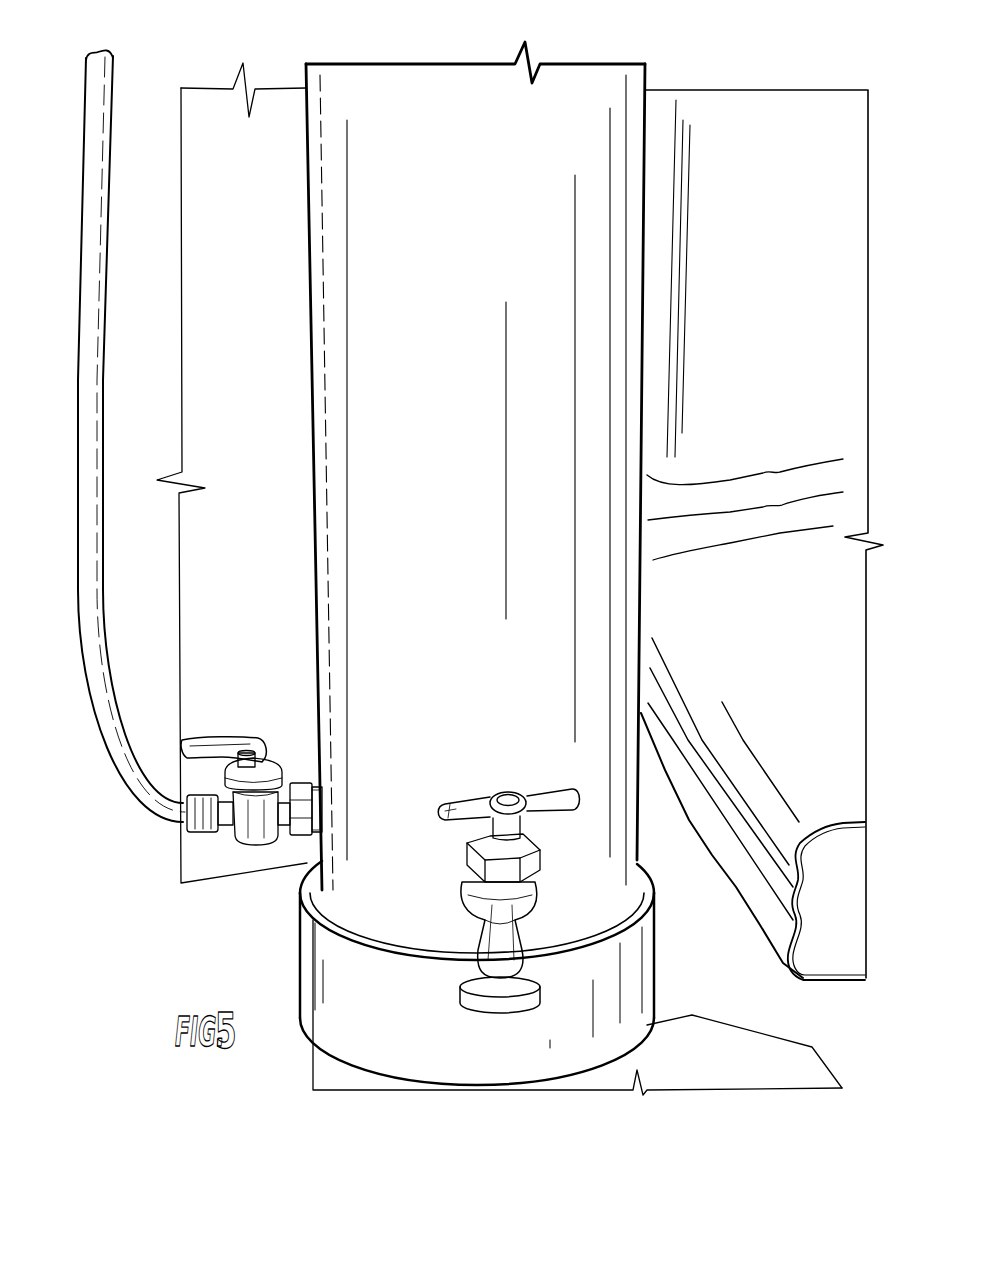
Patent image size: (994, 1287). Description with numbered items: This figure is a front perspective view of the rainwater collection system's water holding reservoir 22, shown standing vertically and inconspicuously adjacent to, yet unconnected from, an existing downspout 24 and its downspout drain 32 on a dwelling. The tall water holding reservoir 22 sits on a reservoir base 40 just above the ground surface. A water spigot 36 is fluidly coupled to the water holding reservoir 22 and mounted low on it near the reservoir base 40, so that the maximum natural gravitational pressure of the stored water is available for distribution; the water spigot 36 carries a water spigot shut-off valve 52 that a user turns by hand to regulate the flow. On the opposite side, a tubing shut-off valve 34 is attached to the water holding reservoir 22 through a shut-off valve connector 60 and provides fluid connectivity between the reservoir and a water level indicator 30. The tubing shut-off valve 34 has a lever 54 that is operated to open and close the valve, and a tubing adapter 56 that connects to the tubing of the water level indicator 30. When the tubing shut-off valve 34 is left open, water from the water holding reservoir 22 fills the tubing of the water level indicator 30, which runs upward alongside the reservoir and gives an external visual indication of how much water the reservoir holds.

The water holding reservoir 22 is at (580, 98).
The downspout 24 is at (778, 180).
The water level indicator 30 is at (88, 478).
The downspout drain 32 is at (840, 920).
The tubing shut-off valve 34 is at (255, 835).
The water spigot 36 is at (490, 942).
The reservoir base 40 is at (634, 999).
The water spigot shut-off valve 52 is at (450, 810).
The lever 54 is at (215, 742).
The tubing adapter 56 is at (207, 825).
The shut-off valve connector 60 is at (305, 773).